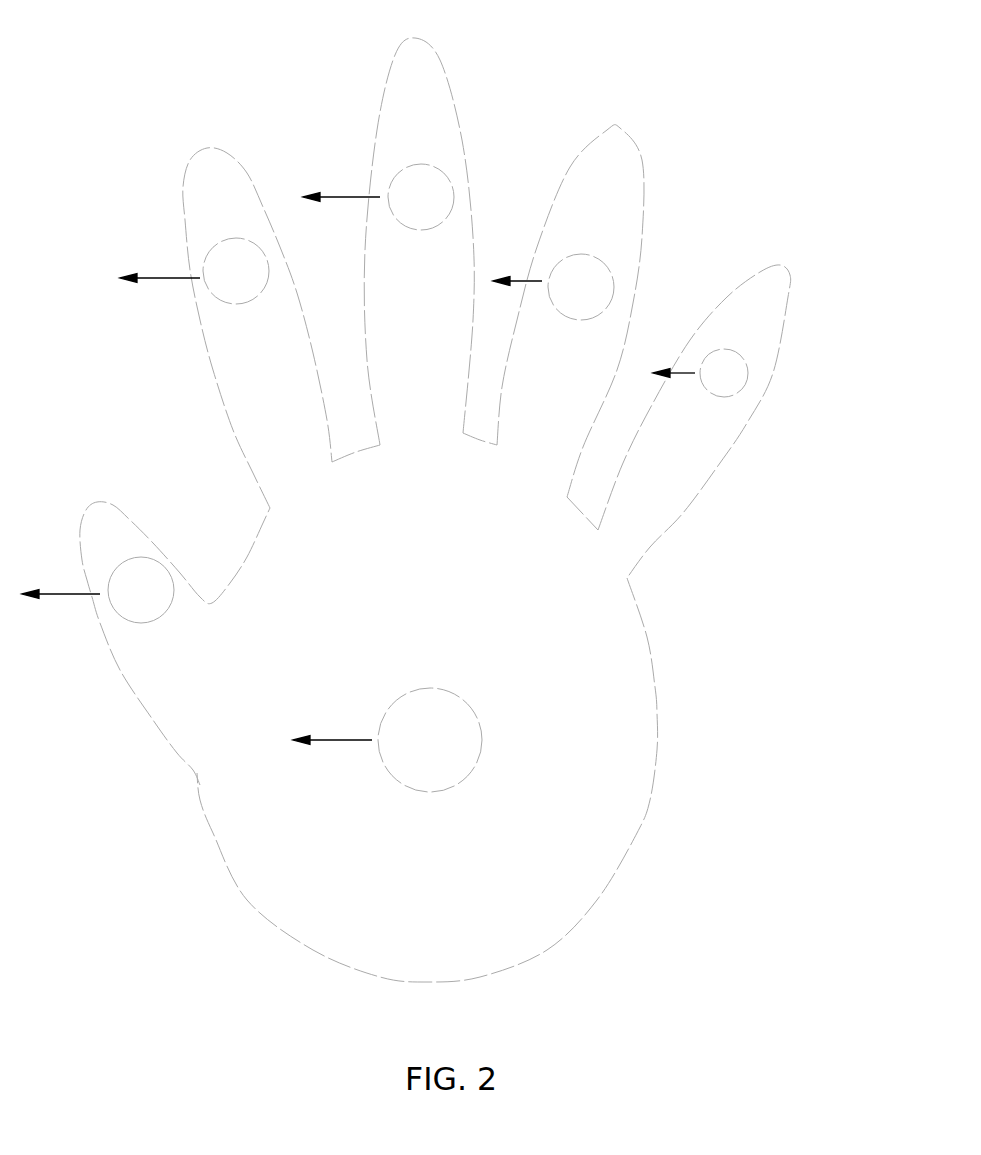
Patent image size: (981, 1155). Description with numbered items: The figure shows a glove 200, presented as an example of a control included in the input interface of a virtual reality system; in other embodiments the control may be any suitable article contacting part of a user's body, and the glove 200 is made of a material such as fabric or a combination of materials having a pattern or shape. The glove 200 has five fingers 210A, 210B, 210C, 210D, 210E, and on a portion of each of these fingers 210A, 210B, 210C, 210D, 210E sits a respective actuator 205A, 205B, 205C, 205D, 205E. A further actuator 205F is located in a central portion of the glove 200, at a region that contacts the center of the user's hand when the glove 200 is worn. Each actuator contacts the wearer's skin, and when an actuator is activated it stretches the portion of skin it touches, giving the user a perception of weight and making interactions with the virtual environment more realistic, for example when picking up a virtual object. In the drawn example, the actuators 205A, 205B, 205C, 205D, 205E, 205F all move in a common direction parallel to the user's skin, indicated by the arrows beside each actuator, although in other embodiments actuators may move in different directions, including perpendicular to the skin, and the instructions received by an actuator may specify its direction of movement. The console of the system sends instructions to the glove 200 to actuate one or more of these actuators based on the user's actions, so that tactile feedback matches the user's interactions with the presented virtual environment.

The glove 200 is at (115, 50).
The actuator 205A is at (142, 555).
The actuator 205B is at (210, 243).
The actuator 205C is at (405, 168).
The actuator 205D is at (572, 254).
The actuator 205E is at (723, 347).
The actuator 205F is at (422, 685).
The finger 210A is at (130, 655).
The finger 210B is at (233, 328).
The finger 210C is at (432, 117).
The finger 210D is at (628, 193).
The finger 210E is at (766, 317).